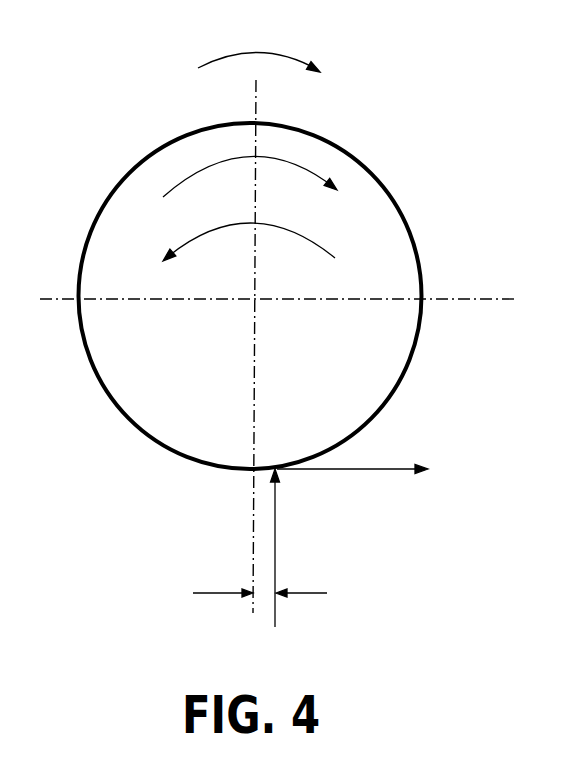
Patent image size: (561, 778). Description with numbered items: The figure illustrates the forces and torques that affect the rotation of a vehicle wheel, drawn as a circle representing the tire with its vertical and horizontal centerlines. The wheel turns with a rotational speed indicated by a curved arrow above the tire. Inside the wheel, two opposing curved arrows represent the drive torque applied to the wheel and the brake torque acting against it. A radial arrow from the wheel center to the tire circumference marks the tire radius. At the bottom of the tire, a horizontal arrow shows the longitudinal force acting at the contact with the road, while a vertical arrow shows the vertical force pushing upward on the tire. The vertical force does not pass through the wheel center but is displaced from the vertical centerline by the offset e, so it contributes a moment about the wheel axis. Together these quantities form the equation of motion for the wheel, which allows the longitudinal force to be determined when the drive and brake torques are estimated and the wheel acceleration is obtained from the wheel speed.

The offset of vertical force from the wheel centerline e is at (260, 570).